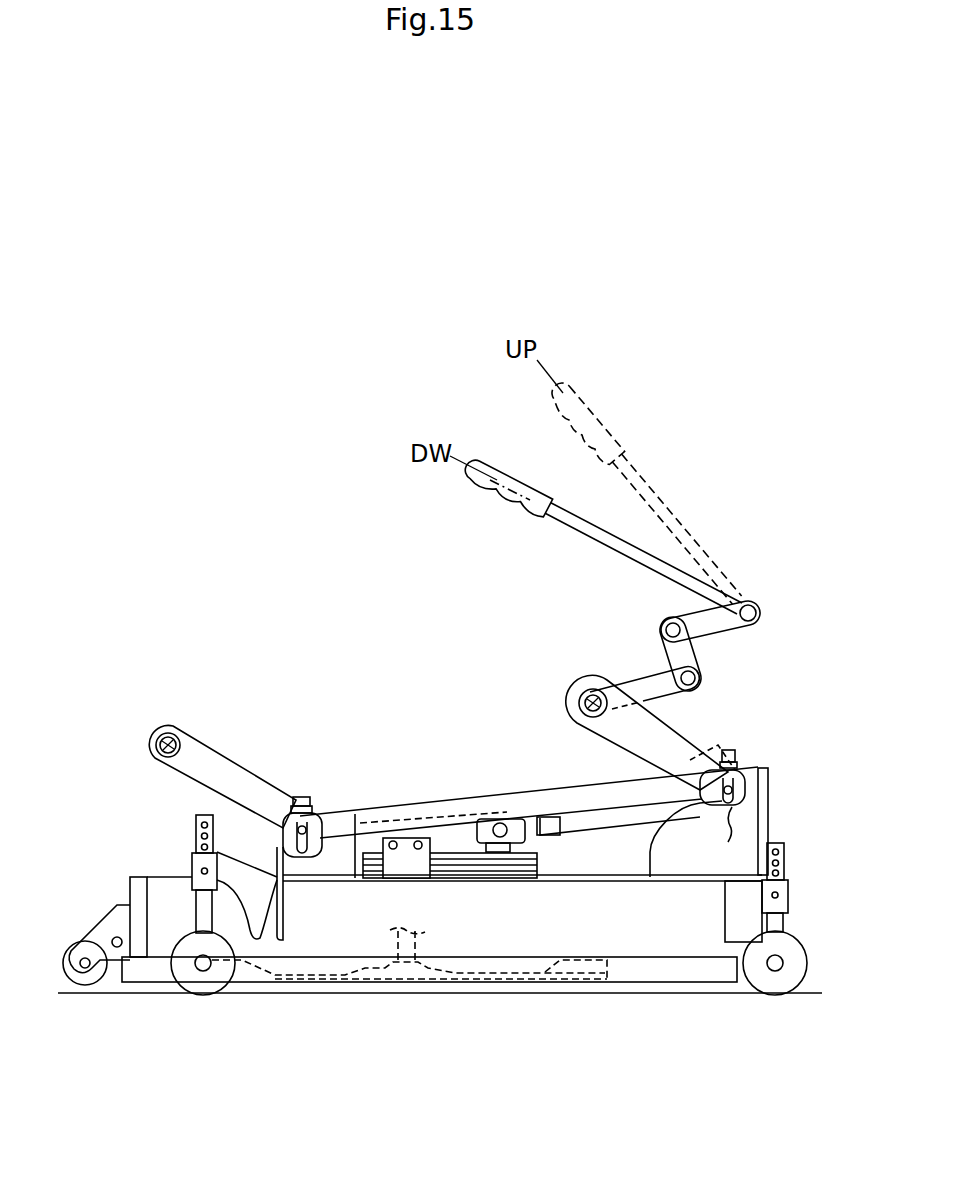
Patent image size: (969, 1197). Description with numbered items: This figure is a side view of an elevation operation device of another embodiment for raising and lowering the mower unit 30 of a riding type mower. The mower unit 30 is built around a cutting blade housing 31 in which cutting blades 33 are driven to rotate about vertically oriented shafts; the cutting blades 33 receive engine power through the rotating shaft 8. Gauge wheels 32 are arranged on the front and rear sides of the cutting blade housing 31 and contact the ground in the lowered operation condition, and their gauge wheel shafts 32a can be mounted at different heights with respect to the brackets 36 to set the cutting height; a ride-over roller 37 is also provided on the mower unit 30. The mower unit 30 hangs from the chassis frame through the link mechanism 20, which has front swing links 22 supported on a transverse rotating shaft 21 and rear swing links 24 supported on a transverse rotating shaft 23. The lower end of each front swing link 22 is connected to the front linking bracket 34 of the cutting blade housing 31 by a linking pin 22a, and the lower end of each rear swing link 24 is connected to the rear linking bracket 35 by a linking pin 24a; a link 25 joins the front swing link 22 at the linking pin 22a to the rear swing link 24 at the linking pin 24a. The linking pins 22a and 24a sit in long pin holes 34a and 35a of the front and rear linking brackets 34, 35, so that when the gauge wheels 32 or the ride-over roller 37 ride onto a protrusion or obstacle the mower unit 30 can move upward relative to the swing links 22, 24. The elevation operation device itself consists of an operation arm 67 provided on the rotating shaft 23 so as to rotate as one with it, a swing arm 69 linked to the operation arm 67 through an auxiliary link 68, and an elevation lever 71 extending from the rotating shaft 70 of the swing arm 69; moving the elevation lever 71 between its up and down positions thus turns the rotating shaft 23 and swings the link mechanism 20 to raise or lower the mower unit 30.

The rotating shaft 8 is at (527, 790).
The link mechanism 20 is at (529, 789).
The rotating shaft 21 is at (168, 737).
The front swing links 22 is at (238, 770).
The linking pin 22a is at (285, 835).
The rotating shaft 23 is at (590, 692).
The rear swing links 24 is at (678, 740).
The linking pin 24a is at (745, 790).
The link 25 is at (455, 796).
The mower unit 30 is at (550, 983).
The cutting blade housing 31 is at (676, 943).
The gauge wheels 32 is at (203, 990).
The gauge wheel shafts 32a is at (192, 908).
The cutting blades 33 is at (505, 990).
The front linking bracket 34 is at (333, 865).
The long pin holes 34a is at (300, 868).
The rear linking bracket 35 is at (665, 855).
The long pin holes 35a is at (729, 840).
The brackets 36 is at (192, 863).
The ride-over roller 37 is at (85, 986).
The operation arm 67 is at (643, 670).
The auxiliary link 68 is at (695, 657).
The swing arm 69 is at (693, 610).
The rotating shaft 70 is at (758, 614).
The elevation lever 71 is at (525, 478).